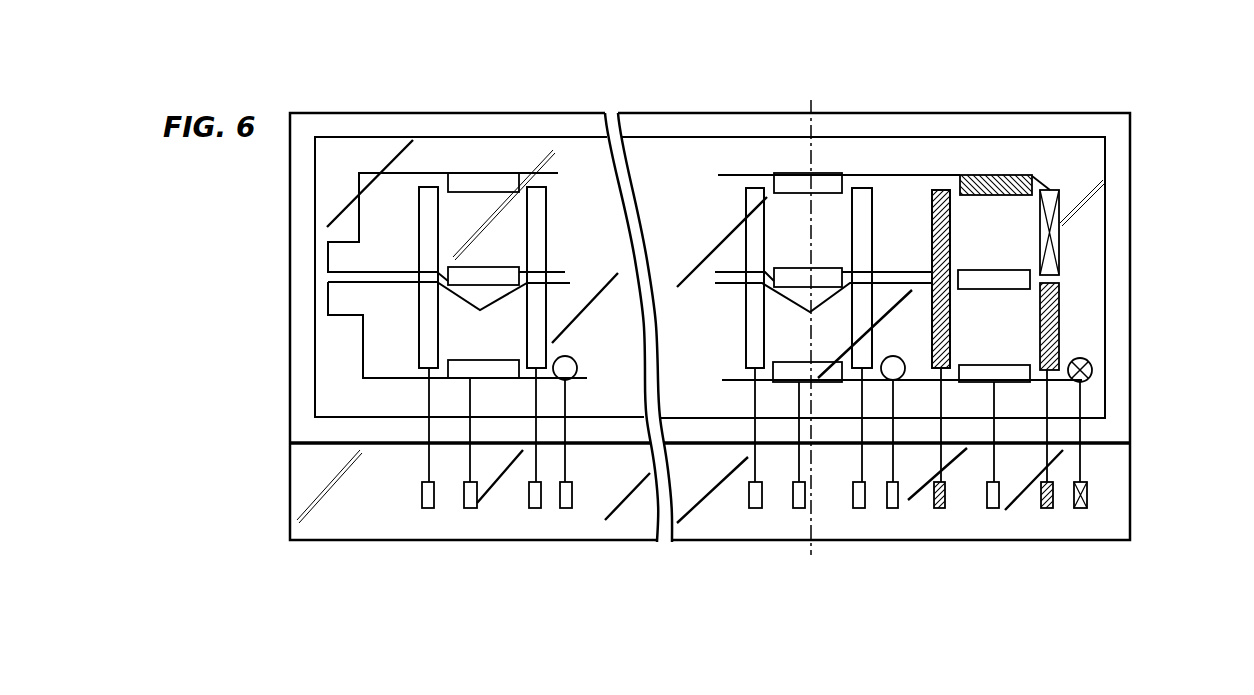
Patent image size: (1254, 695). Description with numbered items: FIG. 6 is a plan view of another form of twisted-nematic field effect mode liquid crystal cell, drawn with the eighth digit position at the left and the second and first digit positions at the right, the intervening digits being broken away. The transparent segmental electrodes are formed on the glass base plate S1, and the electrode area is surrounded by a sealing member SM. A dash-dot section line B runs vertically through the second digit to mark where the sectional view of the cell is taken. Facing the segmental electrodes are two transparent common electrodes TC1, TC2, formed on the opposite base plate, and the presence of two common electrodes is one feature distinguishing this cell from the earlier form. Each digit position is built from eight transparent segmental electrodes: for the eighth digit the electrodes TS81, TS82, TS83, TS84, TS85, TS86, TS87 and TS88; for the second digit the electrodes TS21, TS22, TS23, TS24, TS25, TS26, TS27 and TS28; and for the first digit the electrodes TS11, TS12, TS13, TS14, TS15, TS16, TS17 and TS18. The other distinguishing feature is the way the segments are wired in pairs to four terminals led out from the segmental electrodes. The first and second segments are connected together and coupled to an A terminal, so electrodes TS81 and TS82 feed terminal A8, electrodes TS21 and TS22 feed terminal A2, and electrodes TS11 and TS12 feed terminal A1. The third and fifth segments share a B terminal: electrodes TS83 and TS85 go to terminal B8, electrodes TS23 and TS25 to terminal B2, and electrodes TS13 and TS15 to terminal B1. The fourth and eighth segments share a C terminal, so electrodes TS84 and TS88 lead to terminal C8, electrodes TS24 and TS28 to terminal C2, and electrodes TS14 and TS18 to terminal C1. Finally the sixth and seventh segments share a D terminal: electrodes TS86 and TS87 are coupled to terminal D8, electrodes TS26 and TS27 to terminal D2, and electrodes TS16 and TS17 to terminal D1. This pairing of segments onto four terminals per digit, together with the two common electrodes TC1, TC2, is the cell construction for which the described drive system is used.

The transparent segmental electrode TS86 is at (427, 223).
The transparent segmental electrode TS87 is at (423, 350).
The transparent segmental electrode TS84 is at (470, 273).
The transparent segmental electrode TS83 is at (479, 183).
The transparent segmental electrode TS81 is at (535, 193).
The transparent segmental electrode TS85 is at (530, 370).
The transparent segmental electrode TS88 is at (460, 375).
The transparent segmental electrode TS82 is at (574, 377).
The transparent segmental electrode TS26 is at (747, 210).
The transparent segmental electrode TS27 is at (752, 352).
The transparent segmental electrode TS24 is at (795, 273).
The transparent segmental electrode TS23 is at (795, 182).
The transparent segmental electrode TS21 is at (865, 193).
The transparent segmental electrode TS25 is at (862, 370).
The transparent segmental electrode TS28 is at (785, 373).
The transparent segmental electrode TS22 is at (898, 378).
The transparent segmental electrode TS16 is at (935, 207).
The transparent segmental electrode TS17 is at (942, 370).
The transparent segmental electrode TS14 is at (972, 273).
The transparent segmental electrode TS13 is at (1003, 177).
The transparent segmental electrode TS11 is at (1053, 190).
The transparent segmental electrode TS15 is at (1062, 334).
The transparent segmental electrode TS18 is at (1013, 378).
The transparent segmental electrode TS12 is at (1090, 379).
The transparent common electrode TC1 is at (368, 210).
The transparent common electrode TC2 is at (373, 337).
The sealing member SM is at (352, 433).
The glass base plate S1 is at (295, 507).
The section line B is at (816, 331).
The terminal D8 is at (422, 506).
The terminal C8 is at (464, 506).
The terminal B8 is at (529, 506).
The terminal A8 is at (572, 506).
The terminal D2 is at (749, 506).
The terminal C2 is at (793, 506).
The terminal B2 is at (853, 506).
The terminal A2 is at (887, 506).
The terminal D1 is at (934, 506).
The terminal C1 is at (987, 506).
The terminal B1 is at (1041, 506).
The terminal A1 is at (1097, 514).